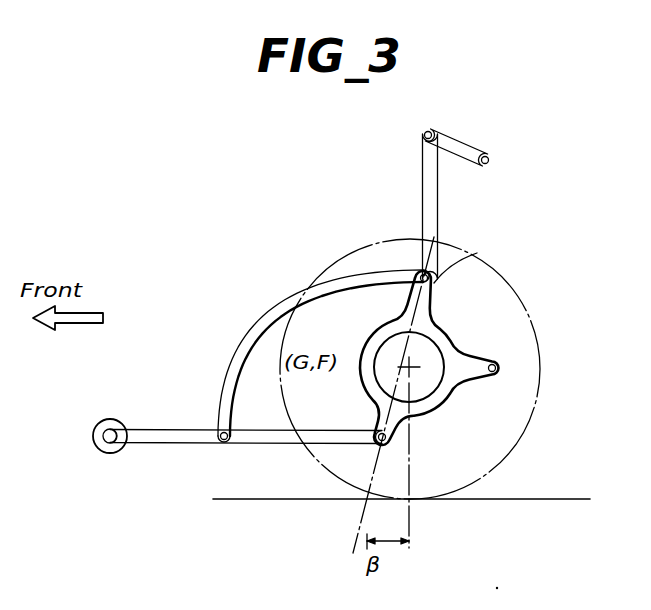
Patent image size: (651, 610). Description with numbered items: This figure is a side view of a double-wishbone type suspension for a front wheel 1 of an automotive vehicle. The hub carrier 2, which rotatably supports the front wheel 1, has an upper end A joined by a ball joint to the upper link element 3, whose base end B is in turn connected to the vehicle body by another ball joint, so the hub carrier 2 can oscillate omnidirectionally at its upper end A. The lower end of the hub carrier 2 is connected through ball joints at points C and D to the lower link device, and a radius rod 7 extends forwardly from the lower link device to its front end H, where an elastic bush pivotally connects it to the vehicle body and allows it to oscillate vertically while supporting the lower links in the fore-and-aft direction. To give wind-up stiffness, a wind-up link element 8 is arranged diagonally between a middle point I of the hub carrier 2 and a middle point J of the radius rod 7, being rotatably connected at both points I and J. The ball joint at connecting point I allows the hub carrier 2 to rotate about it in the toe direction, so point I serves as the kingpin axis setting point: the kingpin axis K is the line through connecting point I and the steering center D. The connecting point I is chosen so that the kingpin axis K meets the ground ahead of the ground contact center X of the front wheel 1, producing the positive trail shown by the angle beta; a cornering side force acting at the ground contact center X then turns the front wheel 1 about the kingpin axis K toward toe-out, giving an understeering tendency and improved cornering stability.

The front wheel 1 is at (539, 389).
The hub carrier 2 is at (421, 181).
The upper link element 3 is at (470, 141).
The radius rod 7 is at (166, 429).
The wind-up link element 8 is at (273, 325).
The upper end A is at (424, 132).
The base end B is at (491, 158).
The connecting point C is at (500, 366).
The steering center D is at (372, 432).
The front end H is at (93, 436).
The connecting point I is at (468, 261).
The middle point J is at (218, 443).
The kingpin axis K is at (380, 457).
The ground contact center X is at (411, 502).